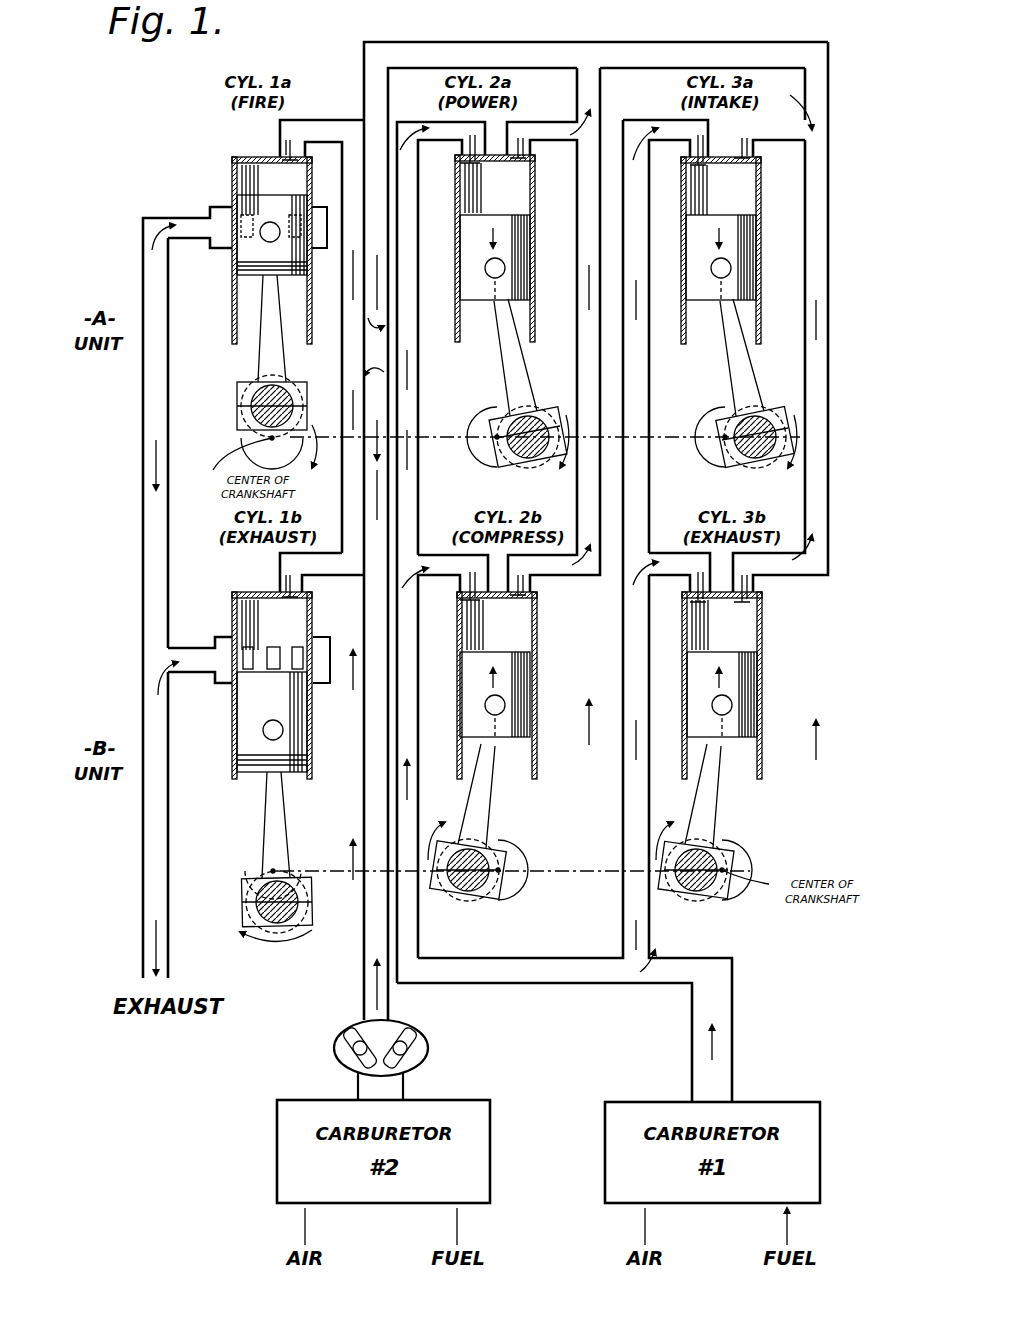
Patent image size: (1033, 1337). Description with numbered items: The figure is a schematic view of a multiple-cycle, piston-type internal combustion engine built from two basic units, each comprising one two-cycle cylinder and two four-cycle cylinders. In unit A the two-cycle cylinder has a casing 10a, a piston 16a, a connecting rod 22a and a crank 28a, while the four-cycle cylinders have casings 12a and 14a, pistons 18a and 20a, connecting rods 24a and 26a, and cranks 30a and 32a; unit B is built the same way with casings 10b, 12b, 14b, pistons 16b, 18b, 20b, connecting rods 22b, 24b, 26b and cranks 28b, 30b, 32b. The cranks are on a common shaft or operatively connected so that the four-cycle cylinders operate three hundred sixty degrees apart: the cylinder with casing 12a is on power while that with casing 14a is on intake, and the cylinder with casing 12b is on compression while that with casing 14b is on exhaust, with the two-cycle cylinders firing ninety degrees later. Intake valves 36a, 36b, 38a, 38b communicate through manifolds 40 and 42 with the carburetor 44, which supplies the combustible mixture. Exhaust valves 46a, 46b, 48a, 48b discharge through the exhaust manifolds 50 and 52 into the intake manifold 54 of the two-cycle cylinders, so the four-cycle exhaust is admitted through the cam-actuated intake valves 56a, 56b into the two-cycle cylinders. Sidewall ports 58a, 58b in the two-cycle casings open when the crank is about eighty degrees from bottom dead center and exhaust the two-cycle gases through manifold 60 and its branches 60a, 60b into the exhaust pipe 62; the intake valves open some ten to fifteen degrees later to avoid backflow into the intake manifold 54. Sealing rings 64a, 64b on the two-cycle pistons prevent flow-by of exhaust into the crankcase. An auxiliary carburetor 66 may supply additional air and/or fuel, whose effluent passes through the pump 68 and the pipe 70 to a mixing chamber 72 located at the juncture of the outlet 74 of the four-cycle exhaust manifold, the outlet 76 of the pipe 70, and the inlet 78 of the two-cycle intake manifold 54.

The casing 10a is at (236, 287).
The casing 10b is at (236, 731).
The casing 12a is at (536, 268).
The casing 12b is at (538, 758).
The casing 14a is at (762, 216).
The casing 14b is at (764, 758).
The piston 16a is at (238, 311).
The piston 16b is at (308, 768).
The piston 18a is at (520, 300).
The piston 18b is at (522, 722).
The piston 20a is at (748, 300).
The piston 20b is at (750, 693).
The connecting rod 22a is at (258, 358).
The connecting rod 22b is at (262, 828).
The connecting rod 24a is at (502, 380).
The connecting rod 24b is at (492, 808).
The connecting rod 26a is at (728, 388).
The connecting rod 26b is at (718, 808).
The crank 28a is at (252, 392).
The crank 28b is at (270, 922).
The crank 30a is at (528, 458).
The crank 30b is at (472, 892).
The crank 32a is at (752, 458).
The crank 32b is at (694, 892).
The intake valve 36a is at (478, 165).
The intake valve 36b is at (478, 602).
The intake valve 38a is at (704, 168).
The intake valve 38b is at (704, 604).
The manifold 40 is at (419, 470).
The manifold 42 is at (651, 483).
The carburetor 44 is at (806, 1102).
The exhaust valve 46a is at (528, 162).
The exhaust valve 46b is at (528, 598).
The exhaust valve 48a is at (752, 163).
The exhaust valve 48b is at (752, 601).
The exhaust manifold 50 is at (578, 398).
The exhaust manifold 52 is at (830, 247).
The intake manifold 54 is at (343, 375).
The intake valve 56a is at (284, 156).
The intake valve 56b is at (300, 598).
The sidewall ports 58a is at (290, 214).
The sidewall ports 58b is at (306, 656).
The manifold 60 is at (143, 496).
The manifold 60a is at (176, 215).
The manifold 60b is at (193, 645).
The exhaust pipe 62 is at (143, 905).
The sealing ring 64a is at (238, 264).
The sealing ring 64b is at (240, 760).
The auxiliary carburetor 66 is at (468, 1100).
The pump 68 is at (336, 1040).
The pipe 70 is at (364, 960).
The mixing chamber 72 is at (343, 353).
The outlet of the 4-cycle exhaust manifold 74 is at (367, 357).
The outlet of the pipe 76 is at (368, 624).
The inlet of the 2-cycle intake manifold 78 is at (343, 352).